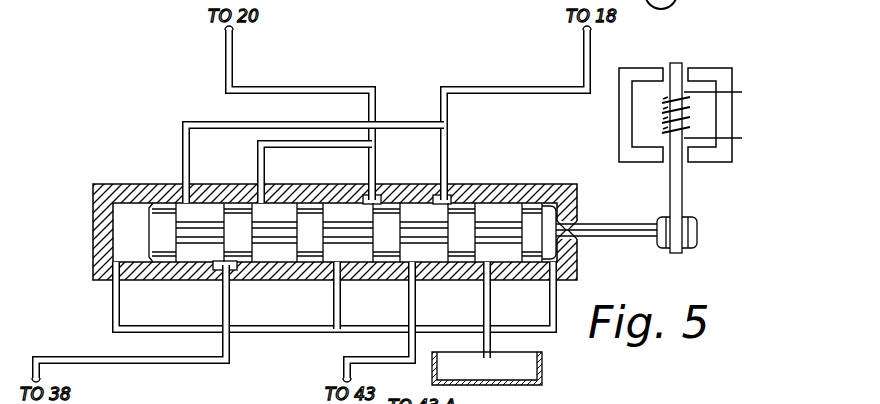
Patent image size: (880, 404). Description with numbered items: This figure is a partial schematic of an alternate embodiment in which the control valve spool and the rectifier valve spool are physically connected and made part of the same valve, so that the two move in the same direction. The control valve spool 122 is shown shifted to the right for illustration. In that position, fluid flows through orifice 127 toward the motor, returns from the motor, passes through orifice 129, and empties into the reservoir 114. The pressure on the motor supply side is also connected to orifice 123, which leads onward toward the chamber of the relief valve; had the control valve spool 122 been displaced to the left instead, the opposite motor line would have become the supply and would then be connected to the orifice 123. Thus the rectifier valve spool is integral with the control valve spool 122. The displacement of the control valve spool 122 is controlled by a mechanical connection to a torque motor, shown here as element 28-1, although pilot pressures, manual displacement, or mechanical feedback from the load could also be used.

The orifice 129 is at (379, 194).
The orifice 127 is at (467, 194).
The orifice 123 is at (230, 280).
The control valve spool 122 is at (465, 250).
The reservoir 114 is at (542, 373).
The solenoid 28-1 is at (733, 153).